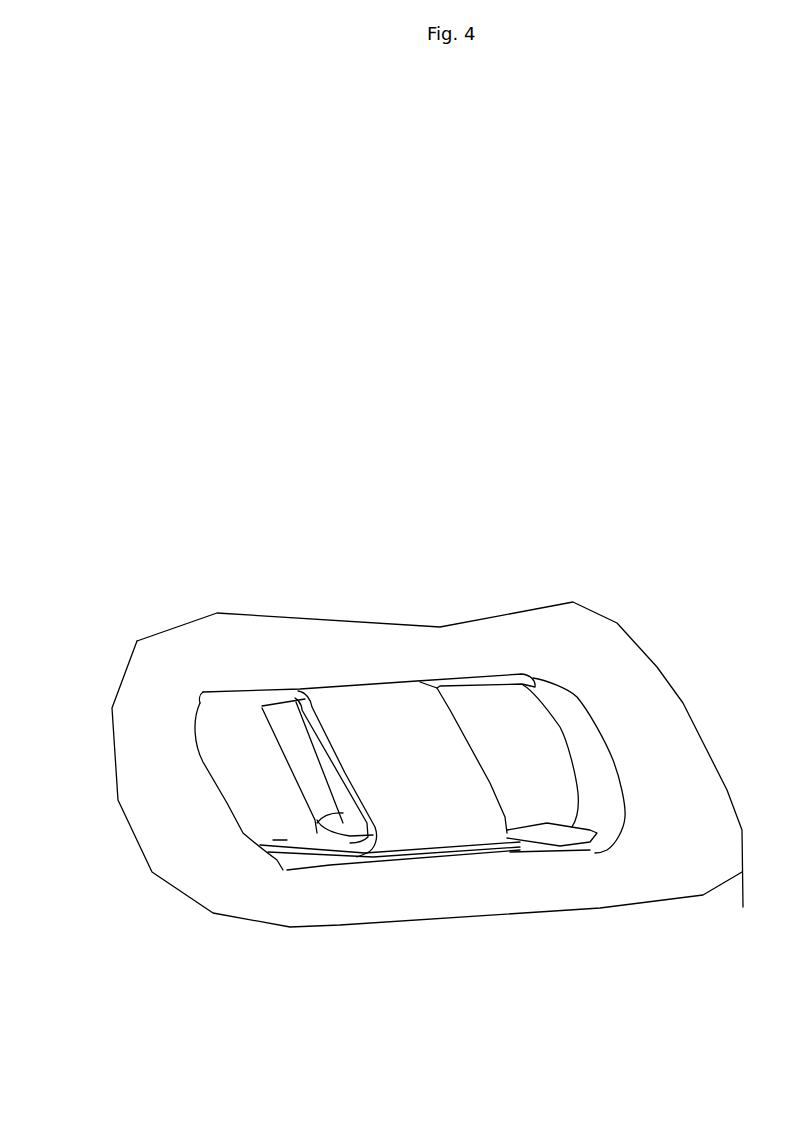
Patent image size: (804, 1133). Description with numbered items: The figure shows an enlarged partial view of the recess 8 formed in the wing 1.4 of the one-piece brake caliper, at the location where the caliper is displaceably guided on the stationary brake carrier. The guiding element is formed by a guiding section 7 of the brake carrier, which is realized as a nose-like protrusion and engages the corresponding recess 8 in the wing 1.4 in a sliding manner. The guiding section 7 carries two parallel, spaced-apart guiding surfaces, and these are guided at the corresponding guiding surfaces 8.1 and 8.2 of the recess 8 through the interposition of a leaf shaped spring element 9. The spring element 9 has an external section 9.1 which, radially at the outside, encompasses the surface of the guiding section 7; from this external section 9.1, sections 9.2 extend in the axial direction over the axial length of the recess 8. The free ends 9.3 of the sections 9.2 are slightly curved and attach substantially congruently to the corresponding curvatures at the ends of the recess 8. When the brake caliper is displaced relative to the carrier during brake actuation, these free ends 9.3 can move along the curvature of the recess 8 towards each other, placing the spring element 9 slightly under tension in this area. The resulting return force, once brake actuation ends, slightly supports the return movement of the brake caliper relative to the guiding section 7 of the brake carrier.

The wing 1.4 is at (693, 853).
The guiding section 7 is at (278, 775).
The recess 8 is at (507, 747).
The guiding surface 8.1 is at (462, 678).
The guiding surface 8.2 is at (523, 848).
The leaf shaped spring element 9 is at (257, 757).
The external section 9.1 is at (400, 788).
The sections 9.2 is at (245, 700).
The free ends 9.3 is at (283, 870).